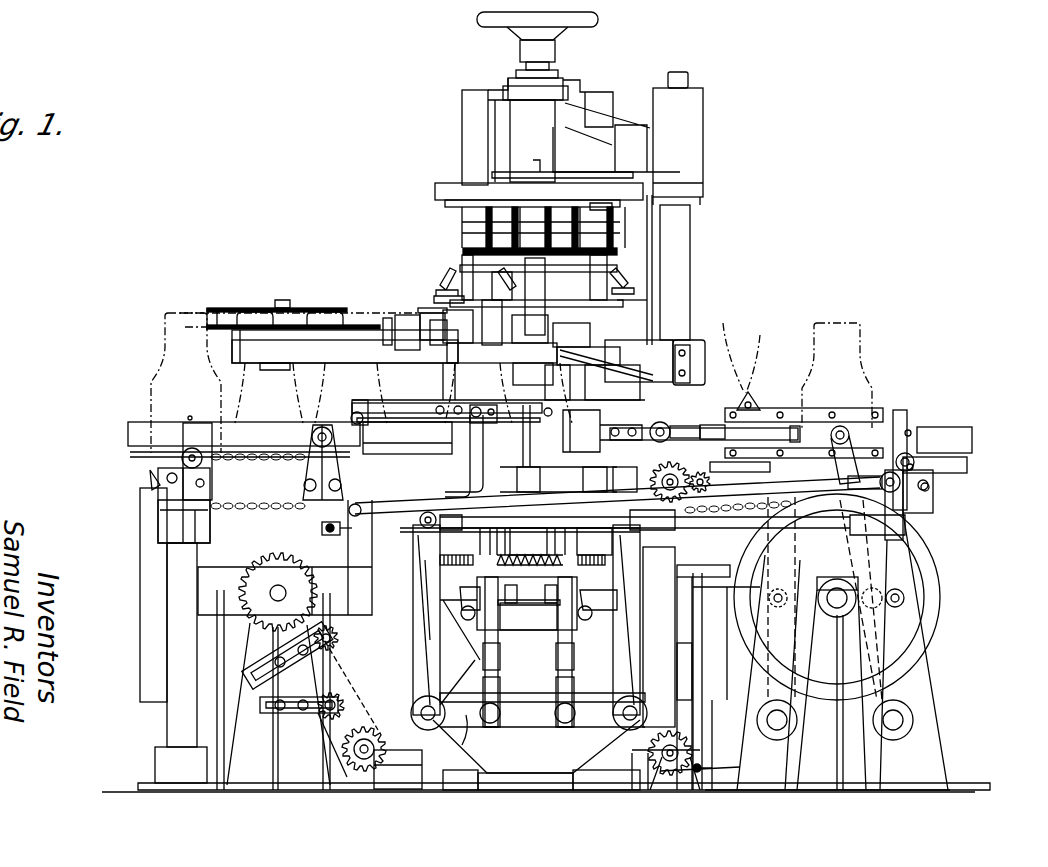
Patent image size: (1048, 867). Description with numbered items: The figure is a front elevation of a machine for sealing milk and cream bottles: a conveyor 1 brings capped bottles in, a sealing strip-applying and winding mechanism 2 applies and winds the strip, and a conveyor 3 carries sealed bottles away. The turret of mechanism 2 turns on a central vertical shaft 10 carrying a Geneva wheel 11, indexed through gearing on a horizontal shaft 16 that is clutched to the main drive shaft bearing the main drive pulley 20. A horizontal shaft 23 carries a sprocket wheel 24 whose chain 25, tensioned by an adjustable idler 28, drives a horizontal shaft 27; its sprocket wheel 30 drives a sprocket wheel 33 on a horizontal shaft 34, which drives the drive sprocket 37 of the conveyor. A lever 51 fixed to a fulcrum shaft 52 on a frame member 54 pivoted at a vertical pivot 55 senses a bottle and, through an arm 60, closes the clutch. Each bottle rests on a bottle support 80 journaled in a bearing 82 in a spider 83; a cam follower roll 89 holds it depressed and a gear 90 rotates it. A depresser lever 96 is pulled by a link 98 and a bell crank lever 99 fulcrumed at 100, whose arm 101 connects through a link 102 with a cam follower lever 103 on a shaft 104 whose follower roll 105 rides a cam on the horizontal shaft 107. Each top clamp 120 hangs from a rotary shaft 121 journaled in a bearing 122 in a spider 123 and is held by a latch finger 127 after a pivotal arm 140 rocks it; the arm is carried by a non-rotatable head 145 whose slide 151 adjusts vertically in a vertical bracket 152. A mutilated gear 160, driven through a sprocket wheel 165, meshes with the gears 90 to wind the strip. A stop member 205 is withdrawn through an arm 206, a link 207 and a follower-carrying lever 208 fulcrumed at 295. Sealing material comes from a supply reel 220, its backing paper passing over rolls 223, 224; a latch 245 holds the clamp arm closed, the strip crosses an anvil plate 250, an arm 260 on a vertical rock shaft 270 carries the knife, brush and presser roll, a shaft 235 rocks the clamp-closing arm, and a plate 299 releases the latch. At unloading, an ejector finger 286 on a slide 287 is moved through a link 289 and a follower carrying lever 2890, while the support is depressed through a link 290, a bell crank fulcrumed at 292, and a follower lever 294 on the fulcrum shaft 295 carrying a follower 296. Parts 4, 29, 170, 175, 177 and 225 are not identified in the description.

The conveyor 1 is at (205, 490).
The sealing strip-applying and winding mechanism 2 is at (455, 212).
The conveyor 3 is at (845, 428).
The section line 4 is at (996, 408).
The central vertical shaft 10 is at (808, 284).
The Geneva wheel 11 is at (835, 62).
The horizontal shaft 16 is at (707, 726).
The main drive pulley 20 is at (147, 618).
The horizontal shaft 23 is at (272, 588).
The sprocket wheel 24 is at (272, 568).
The chain 25 is at (262, 690).
The horizontal shaft 27 is at (378, 762).
The adjustable idler 28 is at (328, 620).
The base frame 29 is at (540, 735).
The sprocket wheel 30 is at (345, 760).
The sprocket wheel 33 is at (655, 748).
The horizontal shaft 34 is at (712, 768).
The drive sprocket 37 is at (655, 430).
The lever 51 is at (480, 425).
The fulcrum shaft 52 is at (470, 480).
The frame member 54 is at (400, 458).
The vertical pivot 55 is at (352, 410).
The arm 60 is at (336, 535).
The bottle support 80 is at (558, 479).
The bearing 82 is at (583, 546).
The spider 83 is at (670, 560).
The cam follower roll 89 is at (478, 660).
The gear 90 is at (412, 575).
The depresser lever 96 is at (456, 596).
The link 98 is at (515, 650).
The bell crank lever 99 is at (479, 735).
The fulcrum 100 is at (415, 713).
The arm 101 is at (418, 645).
The link 102 is at (501, 546).
The cam follower lever 103 is at (780, 553).
The shaft 104 is at (768, 718).
The cam follower roll 105 is at (773, 620).
The horizontal shaft 107 is at (825, 615).
The top clamp 120 is at (470, 340).
The rotary shaft 121 is at (470, 275).
The bearing 122 is at (537, 229).
The spider 123 is at (610, 258).
The latch finger 127 is at (612, 222).
The pivotal arm 140 is at (452, 200).
The non-rotatable head 145 is at (552, 112).
The slide 151 is at (498, 112).
The vertical bracket 152 is at (476, 92).
The mutilated gear 160 is at (706, 660).
The sprocket wheel 165 is at (750, 770).
The bar 170 is at (620, 372).
The rod 175 is at (536, 436).
The plate 177 is at (560, 372).
The stop member 205 is at (435, 404).
The arm 206 is at (310, 528).
The link 207 is at (618, 520).
The follower-carrying lever 208 is at (900, 520).
The supply reel 220 is at (235, 325).
The roll 223 is at (396, 318).
The roll 224 is at (365, 330).
The block 225 is at (420, 312).
The shaft 235 is at (560, 655).
The latch 245 is at (446, 282).
The anvil plate 250 is at (507, 293).
The arm 260 is at (658, 352).
The vertical rock shaft 270 is at (700, 220).
The ejector finger 286 is at (582, 440).
The slide 287 is at (702, 428).
The link 289 is at (765, 432).
The link 290 is at (527, 636).
The fulcrum 292 is at (640, 700).
The follower lever 294 is at (895, 572).
The fulcrum shaft 295 is at (905, 715).
The follower 296 is at (905, 598).
The plate 299 is at (572, 300).
The follower carrying lever 2890 is at (850, 450).